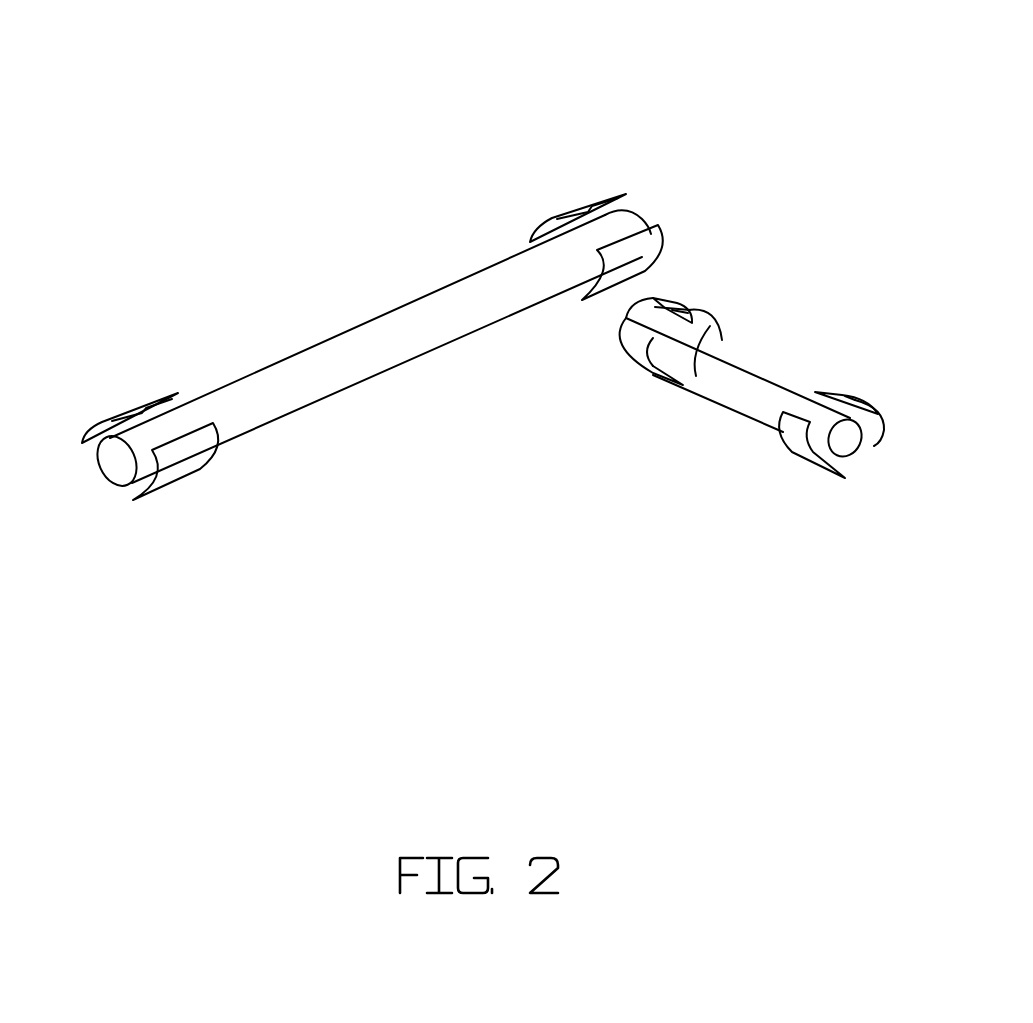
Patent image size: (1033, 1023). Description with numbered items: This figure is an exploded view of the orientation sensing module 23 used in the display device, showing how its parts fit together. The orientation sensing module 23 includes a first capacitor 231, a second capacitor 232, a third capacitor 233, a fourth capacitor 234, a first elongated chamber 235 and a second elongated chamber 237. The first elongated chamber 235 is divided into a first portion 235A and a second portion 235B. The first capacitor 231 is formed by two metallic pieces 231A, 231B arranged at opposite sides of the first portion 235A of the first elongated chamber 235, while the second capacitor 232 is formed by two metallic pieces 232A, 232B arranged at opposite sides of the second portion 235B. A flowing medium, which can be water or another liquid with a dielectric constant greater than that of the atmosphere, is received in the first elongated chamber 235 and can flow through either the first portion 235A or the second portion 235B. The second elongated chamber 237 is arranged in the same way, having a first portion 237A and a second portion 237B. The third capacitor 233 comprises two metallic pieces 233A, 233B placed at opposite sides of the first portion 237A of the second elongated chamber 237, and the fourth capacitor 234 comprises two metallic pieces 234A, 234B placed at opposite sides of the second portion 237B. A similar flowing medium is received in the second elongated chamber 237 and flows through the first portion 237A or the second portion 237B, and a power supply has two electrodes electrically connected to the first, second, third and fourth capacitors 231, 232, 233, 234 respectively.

The orientation sensing module 23 is at (470, 57).
The first elongated chamber 235 is at (343, 316).
The first portion 235A is at (556, 192).
The second portion 235B is at (170, 422).
The first capacitor 231 is at (671, 223).
The metallic piece 231A is at (653, 243).
The metallic piece 231B is at (600, 202).
The second capacitor 232 is at (157, 512).
The metallic piece 232A is at (192, 460).
The metallic piece 232B is at (112, 488).
The second elongated chamber 237 is at (769, 357).
The first portion 237A is at (652, 314).
The second portion 237B is at (820, 410).
The third capacitor 233 is at (660, 405).
The metallic piece 233A is at (642, 355).
The metallic piece 233B is at (710, 327).
The fourth capacitor 234 is at (854, 481).
The metallic piece 234A is at (803, 453).
The metallic piece 234B is at (877, 433).